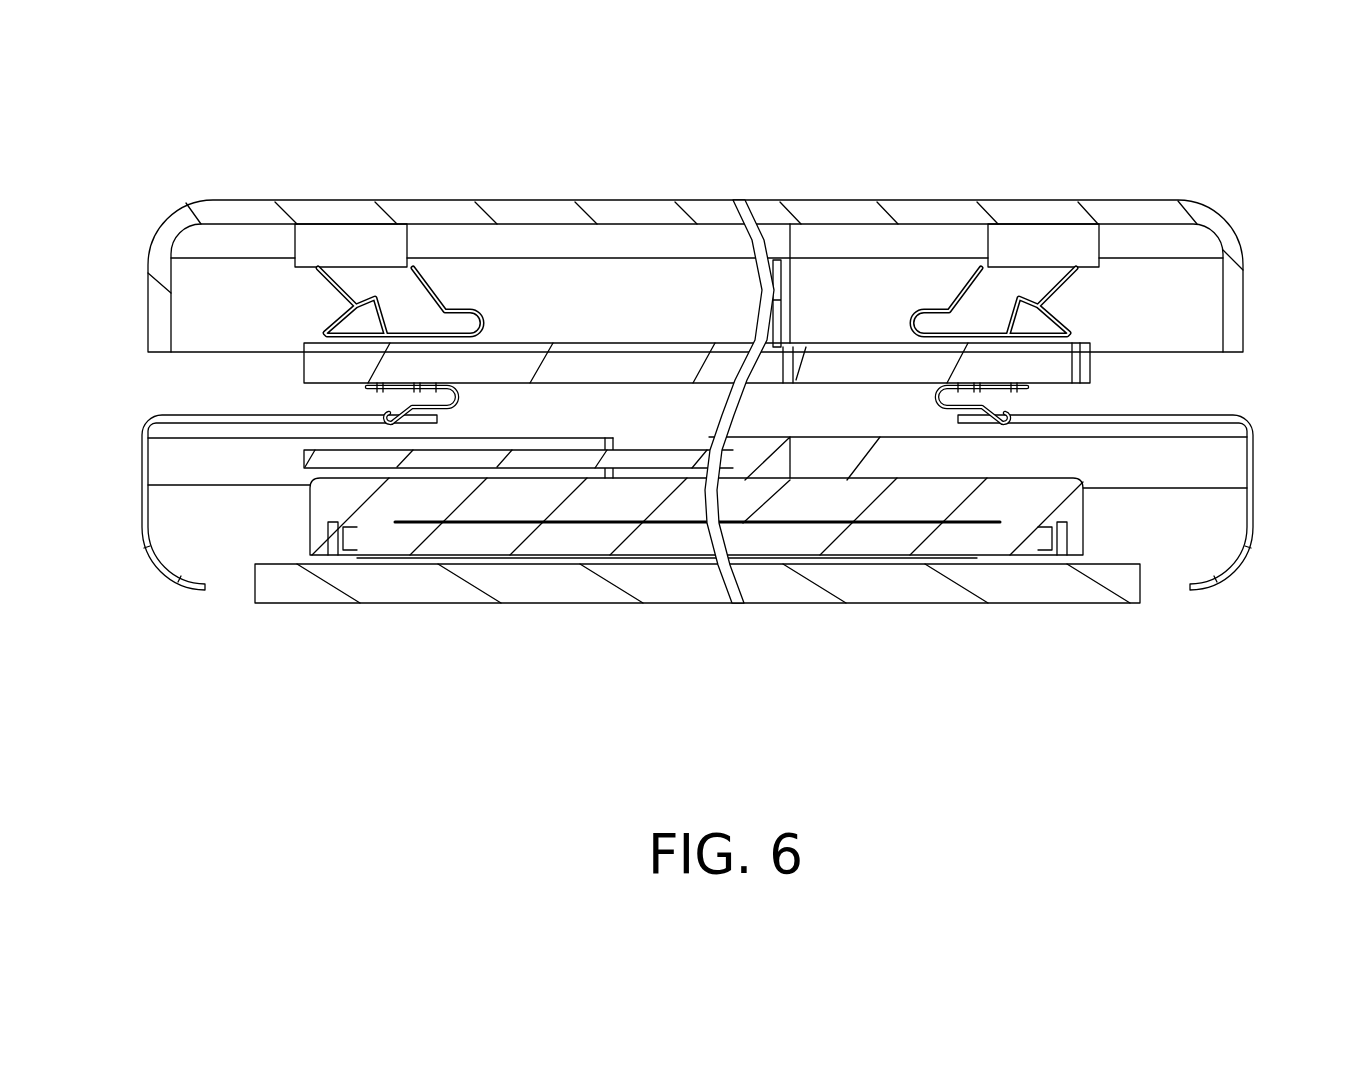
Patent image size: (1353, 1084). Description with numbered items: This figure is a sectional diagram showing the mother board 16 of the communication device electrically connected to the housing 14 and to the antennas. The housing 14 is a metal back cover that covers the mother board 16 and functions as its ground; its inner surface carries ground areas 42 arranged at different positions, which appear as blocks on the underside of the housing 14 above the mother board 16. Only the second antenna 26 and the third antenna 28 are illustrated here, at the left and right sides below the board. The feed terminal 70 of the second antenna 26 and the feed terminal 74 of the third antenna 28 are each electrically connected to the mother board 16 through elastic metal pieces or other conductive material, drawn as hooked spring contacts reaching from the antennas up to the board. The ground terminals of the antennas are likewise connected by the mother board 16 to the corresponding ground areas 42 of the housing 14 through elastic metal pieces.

The housing 14 is at (533, 213).
The mother board 16 is at (660, 369).
The second antenna 26 is at (143, 582).
The third antenna 28 is at (1250, 582).
The ground area 42 is at (357, 238).
The feed terminal 70 is at (382, 418).
The feed terminal 74 is at (995, 418).